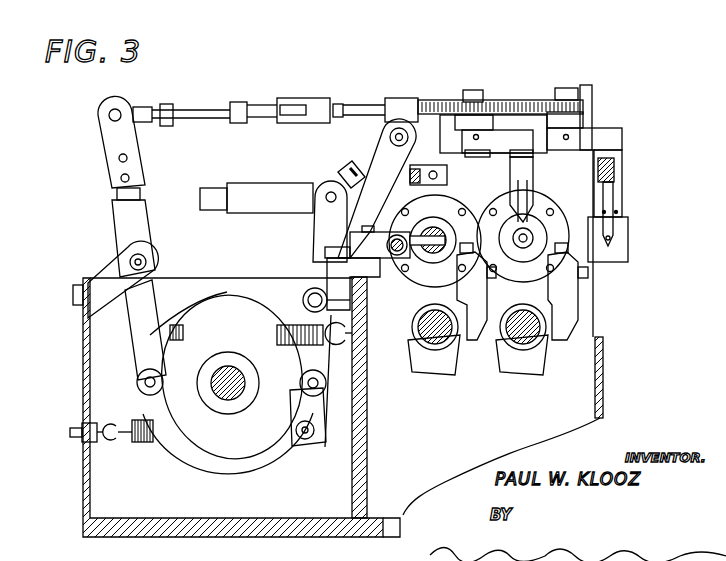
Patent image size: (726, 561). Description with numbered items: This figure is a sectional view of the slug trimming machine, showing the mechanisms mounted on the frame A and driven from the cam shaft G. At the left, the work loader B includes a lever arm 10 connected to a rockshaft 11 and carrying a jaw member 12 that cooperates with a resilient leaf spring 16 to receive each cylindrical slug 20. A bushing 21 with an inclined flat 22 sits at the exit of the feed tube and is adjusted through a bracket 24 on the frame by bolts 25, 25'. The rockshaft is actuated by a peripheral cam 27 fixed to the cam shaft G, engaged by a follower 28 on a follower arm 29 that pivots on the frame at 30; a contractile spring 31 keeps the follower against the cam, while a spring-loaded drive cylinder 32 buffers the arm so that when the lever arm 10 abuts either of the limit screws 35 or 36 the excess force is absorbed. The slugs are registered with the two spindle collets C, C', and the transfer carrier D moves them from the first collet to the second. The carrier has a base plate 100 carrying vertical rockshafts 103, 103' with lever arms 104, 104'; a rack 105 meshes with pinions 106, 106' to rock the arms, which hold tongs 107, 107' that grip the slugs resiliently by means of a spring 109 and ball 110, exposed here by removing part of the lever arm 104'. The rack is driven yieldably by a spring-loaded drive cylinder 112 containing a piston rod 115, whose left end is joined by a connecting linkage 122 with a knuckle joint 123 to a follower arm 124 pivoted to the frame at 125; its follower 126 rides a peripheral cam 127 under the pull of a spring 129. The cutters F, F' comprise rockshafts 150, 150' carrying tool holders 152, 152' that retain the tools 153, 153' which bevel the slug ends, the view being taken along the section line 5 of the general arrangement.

The frame A is at (82, 340).
The work loader B is at (383, 162).
The spindle collet C is at (435, 250).
The spindle collet C' is at (523, 225).
The transfer carrier D is at (445, 102).
The cutter F is at (471, 216).
The cutter F' is at (568, 219).
The cam shaft G is at (230, 366).
The section line 5 is at (388, 109).
The lever arm 10 is at (388, 148).
The rockshaft 11 is at (392, 135).
The jaw member 12 is at (420, 258).
The resilient leaf spring 16 is at (433, 235).
The slug 20 is at (441, 240).
The bushing 21 is at (378, 275).
The inclined flat 22 is at (387, 247).
The bracket 24 is at (335, 243).
The bolt 25 is at (373, 207).
The bolt 25' is at (315, 268).
The peripheral cam 27 is at (185, 305).
The follower 28 is at (318, 391).
The follower arm 29 is at (318, 432).
The pivot 30 is at (304, 301).
The contractile spring 31 is at (143, 445).
The spring-loaded drive cylinder 32 is at (232, 185).
The limit screw 35 is at (343, 172).
The limit screw 36 is at (410, 178).
The base plate 100 is at (596, 114).
The rockshaft 103 is at (477, 77).
The rockshaft 103' is at (557, 77).
The lever arm 104 is at (493, 136).
The lever arm 104' is at (606, 129).
The rack 105 is at (430, 100).
The pinion 106 is at (500, 86).
The pinion 106' is at (593, 99).
The tongs 107 is at (503, 186).
The tongs 107' is at (637, 212).
The spring 109 is at (614, 163).
The ball 110 is at (617, 175).
The spring-loaded drive cylinder 112 is at (392, 98).
The piston rod 115 is at (338, 103).
The connecting linkage 122 is at (183, 108).
The knuckle joint 123 is at (280, 100).
The follower arm 124 is at (115, 213).
The pivot 125 is at (129, 262).
The follower 126 is at (137, 385).
The peripheral cam 127 is at (222, 300).
The spring 129 is at (170, 331).
The rockshaft 150 is at (419, 339).
The rockshaft 150' is at (569, 338).
The tool holder 152 is at (417, 327).
The tool holder 152' is at (574, 308).
The tool 153 is at (473, 296).
The tool 153' is at (562, 296).